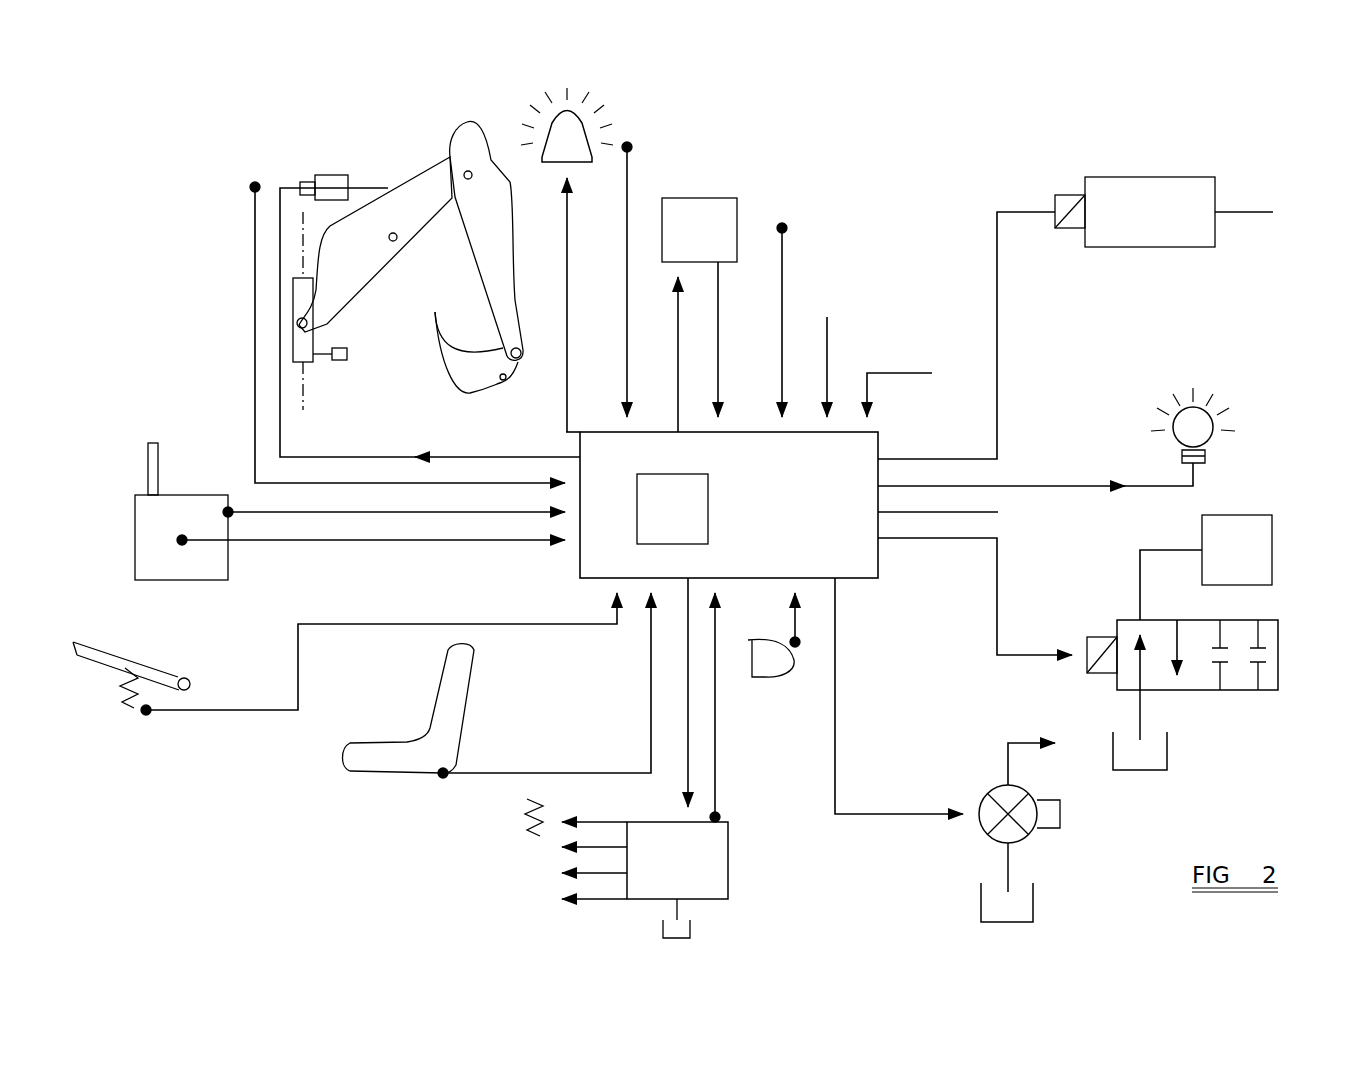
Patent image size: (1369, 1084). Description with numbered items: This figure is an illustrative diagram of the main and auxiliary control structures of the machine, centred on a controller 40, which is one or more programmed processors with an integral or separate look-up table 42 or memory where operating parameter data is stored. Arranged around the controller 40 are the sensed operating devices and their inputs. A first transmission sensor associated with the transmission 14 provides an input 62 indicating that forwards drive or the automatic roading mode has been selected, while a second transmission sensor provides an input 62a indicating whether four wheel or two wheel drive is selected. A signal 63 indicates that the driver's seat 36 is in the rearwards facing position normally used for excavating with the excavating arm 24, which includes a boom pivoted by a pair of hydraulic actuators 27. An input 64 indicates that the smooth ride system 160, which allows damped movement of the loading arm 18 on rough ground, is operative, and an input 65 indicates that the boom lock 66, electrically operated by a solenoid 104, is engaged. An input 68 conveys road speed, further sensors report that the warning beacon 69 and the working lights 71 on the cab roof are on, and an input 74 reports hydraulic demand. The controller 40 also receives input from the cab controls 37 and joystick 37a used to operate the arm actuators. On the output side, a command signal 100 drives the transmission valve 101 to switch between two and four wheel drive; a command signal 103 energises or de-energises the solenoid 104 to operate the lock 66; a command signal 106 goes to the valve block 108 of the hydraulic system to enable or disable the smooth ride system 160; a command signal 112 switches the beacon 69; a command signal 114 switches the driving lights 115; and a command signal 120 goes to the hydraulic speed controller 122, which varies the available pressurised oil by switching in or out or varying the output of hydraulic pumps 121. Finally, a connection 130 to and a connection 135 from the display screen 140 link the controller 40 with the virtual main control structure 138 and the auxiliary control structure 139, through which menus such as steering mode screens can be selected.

The transmission 14 is at (150, 555).
The loading arm 18 is at (158, 672).
The excavating arm 24 is at (370, 260).
The hydraulic actuators 27 is at (340, 360).
The driver's seat 36 is at (475, 697).
The controls 37 is at (895, 361).
The joystick 37a is at (827, 328).
The controller 40 is at (820, 530).
The look-up table 42 is at (672, 509).
The input 62 is at (315, 542).
The input 62a is at (440, 512).
The signal 63 is at (535, 773).
The input 64 is at (500, 624).
The input 65 is at (365, 455).
The boom lock 66 is at (340, 175).
The input 68 is at (782, 293).
The warning beacon 69 is at (556, 146).
The working lights 71 is at (768, 677).
The input 74 is at (715, 790).
The output command signal 100 is at (997, 580).
The transmission valve 101 is at (1237, 690).
The output command signal 103 is at (998, 400).
The solenoid 104 is at (305, 182).
The command signal 106 is at (688, 712).
The valve block 108 is at (728, 868).
The command signal 112 is at (567, 330).
The command signal 114 is at (1066, 485).
The driving lights 115 is at (1205, 456).
The command signal 120 is at (903, 814).
The hydraulic pumps 121 is at (995, 840).
The hydraulic speed controller 122 is at (1053, 830).
The connection 130 is at (718, 350).
The connection 135 is at (678, 360).
The virtual main control structure 138 is at (767, 142).
The auxiliary control structure 139 is at (698, 198).
The display screen 140 is at (715, 215).
The smooth ride system 160 is at (125, 700).